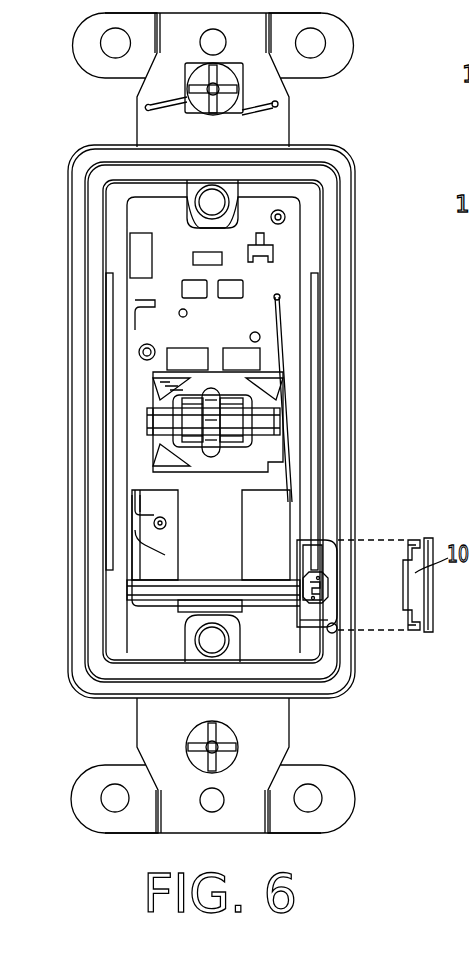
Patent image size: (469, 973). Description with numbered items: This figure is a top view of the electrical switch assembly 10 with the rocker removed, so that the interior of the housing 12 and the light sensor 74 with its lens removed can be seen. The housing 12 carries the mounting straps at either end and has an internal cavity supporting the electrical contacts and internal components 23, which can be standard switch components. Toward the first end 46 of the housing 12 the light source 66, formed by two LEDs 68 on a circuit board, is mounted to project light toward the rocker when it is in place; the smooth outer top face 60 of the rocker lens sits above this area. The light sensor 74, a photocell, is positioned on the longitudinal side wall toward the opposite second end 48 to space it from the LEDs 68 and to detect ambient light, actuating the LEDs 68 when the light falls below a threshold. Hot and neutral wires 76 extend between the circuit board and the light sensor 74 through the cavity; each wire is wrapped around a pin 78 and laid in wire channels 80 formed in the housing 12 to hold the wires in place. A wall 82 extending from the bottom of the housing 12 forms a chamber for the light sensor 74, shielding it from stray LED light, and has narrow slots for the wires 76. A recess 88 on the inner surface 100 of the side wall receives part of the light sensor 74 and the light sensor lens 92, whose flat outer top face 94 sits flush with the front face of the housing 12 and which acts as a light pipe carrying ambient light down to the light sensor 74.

The electrical switch assembly 10 is at (351, 727).
The housing 12 is at (303, 147).
The internal components 23 is at (243, 430).
The first end 46 is at (347, 150).
The second end 48 is at (92, 700).
The outer top face 60 is at (300, 240).
The light source 66 is at (178, 268).
The LEDs 68 is at (182, 290).
The light sensor 74 is at (325, 563).
The wires 76 is at (302, 498).
The pin 78 is at (160, 523).
The wire channels 80 is at (133, 603).
The wall 82 is at (272, 633).
The recess 88 is at (334, 630).
The light sensor lens 92 is at (433, 540).
The outer top face 94 is at (428, 607).
The inner surface 100 is at (315, 512).